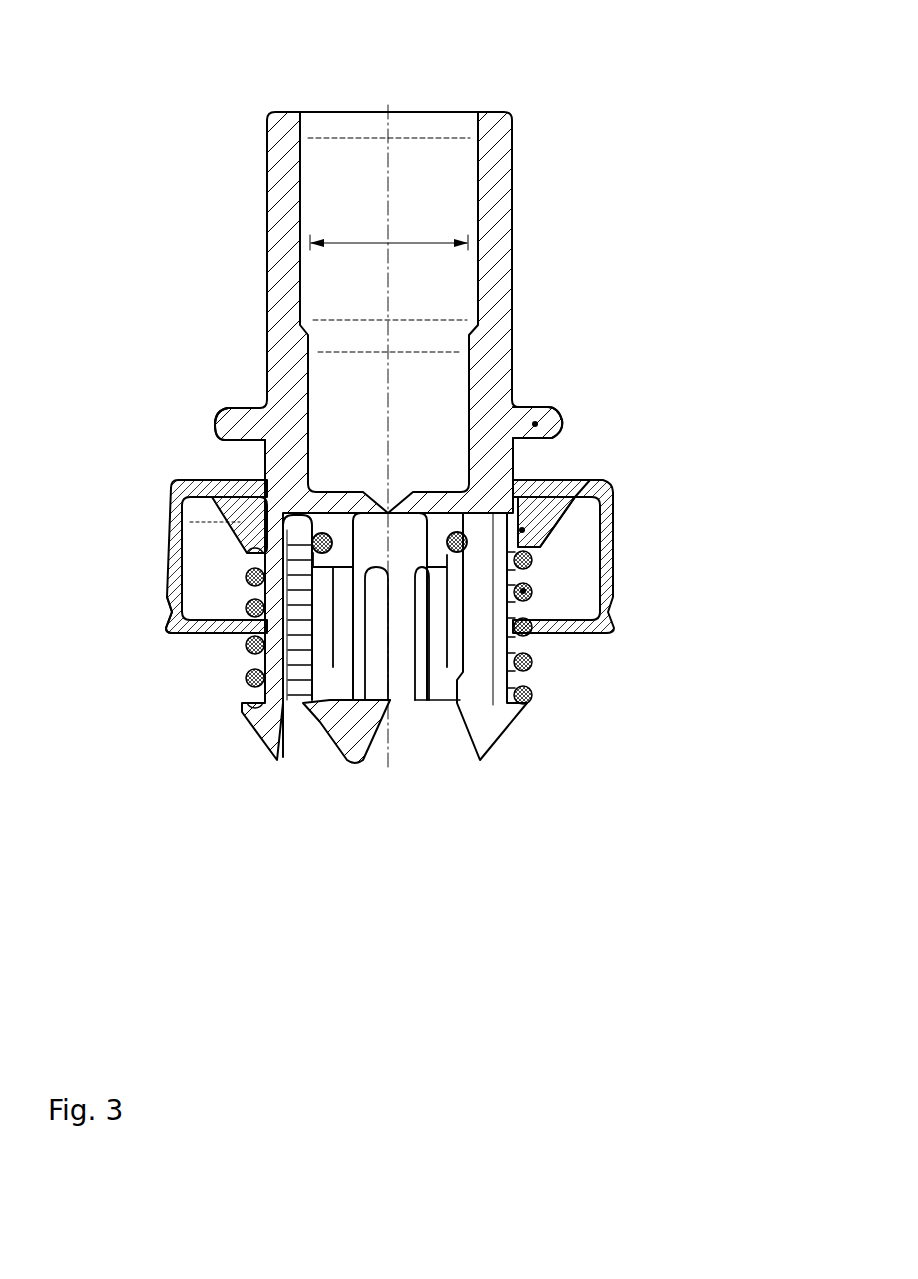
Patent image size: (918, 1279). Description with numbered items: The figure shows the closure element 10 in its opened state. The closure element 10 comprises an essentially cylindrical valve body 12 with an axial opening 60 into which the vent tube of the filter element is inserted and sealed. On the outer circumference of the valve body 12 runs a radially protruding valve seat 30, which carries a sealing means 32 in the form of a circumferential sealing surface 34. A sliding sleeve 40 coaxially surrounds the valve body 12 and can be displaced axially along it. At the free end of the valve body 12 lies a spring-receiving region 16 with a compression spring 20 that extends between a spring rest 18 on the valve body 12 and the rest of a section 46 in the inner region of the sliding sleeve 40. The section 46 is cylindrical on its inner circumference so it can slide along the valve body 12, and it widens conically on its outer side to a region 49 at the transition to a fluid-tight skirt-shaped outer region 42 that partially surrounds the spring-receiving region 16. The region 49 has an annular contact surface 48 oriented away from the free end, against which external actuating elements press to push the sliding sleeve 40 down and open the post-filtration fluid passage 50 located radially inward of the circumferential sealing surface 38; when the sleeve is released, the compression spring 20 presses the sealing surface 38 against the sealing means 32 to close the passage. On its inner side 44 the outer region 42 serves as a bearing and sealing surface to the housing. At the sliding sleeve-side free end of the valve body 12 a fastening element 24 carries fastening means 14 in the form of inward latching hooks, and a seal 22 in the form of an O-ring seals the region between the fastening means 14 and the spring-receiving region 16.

The closure element 10 is at (130, 112).
The valve body 12 is at (503, 288).
The fastening means 14 is at (438, 700).
The spring-receiving region 16 is at (550, 692).
The spring rest 18 is at (510, 708).
The compression spring 20 is at (523, 591).
The seal 22 is at (262, 620).
The fastening element 24 is at (337, 702).
The valve seat 30 is at (535, 424).
The sealing means 32 is at (173, 409).
The circumferential sealing surface 34 is at (217, 428).
The sealing surface 38 is at (230, 500).
The sliding sleeve 40 is at (522, 530).
The outer region 42 is at (613, 532).
The inner side 44 is at (197, 600).
The section 46 is at (527, 510).
The contact surface 48 is at (586, 490).
The region 49 is at (585, 490).
The post-filtration fluid passage 50 is at (247, 515).
The axial opening 60 is at (316, 205).